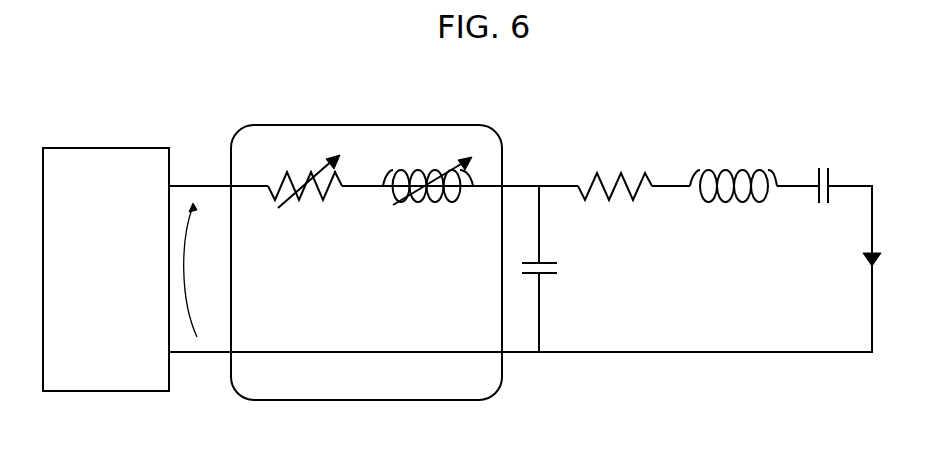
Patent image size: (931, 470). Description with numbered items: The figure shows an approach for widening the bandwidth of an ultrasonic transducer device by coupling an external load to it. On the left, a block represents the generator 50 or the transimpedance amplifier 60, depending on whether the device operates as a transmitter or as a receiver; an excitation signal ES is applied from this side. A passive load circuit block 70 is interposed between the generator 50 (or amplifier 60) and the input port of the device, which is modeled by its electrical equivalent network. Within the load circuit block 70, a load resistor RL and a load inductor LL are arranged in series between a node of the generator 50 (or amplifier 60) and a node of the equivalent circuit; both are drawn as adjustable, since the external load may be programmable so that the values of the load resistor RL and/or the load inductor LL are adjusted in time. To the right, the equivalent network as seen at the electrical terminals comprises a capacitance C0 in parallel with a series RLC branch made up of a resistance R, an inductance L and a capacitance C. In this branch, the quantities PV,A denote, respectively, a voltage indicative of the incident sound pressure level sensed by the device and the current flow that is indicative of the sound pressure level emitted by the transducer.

The generator 50 is at (98, 163).
The transimpedance amplifier 60 is at (106, 269).
The load circuit block 70 is at (310, 133).
The load resistor RL is at (313, 200).
The load inductor LL is at (432, 203).
The capacitance C0 is at (550, 272).
The resistance R is at (628, 173).
The inductance L is at (705, 172).
The capacitance C is at (832, 175).
The excitation signal ES is at (202, 270).
The voltage indicative of incident sound pressure and current flow PV,A is at (846, 270).